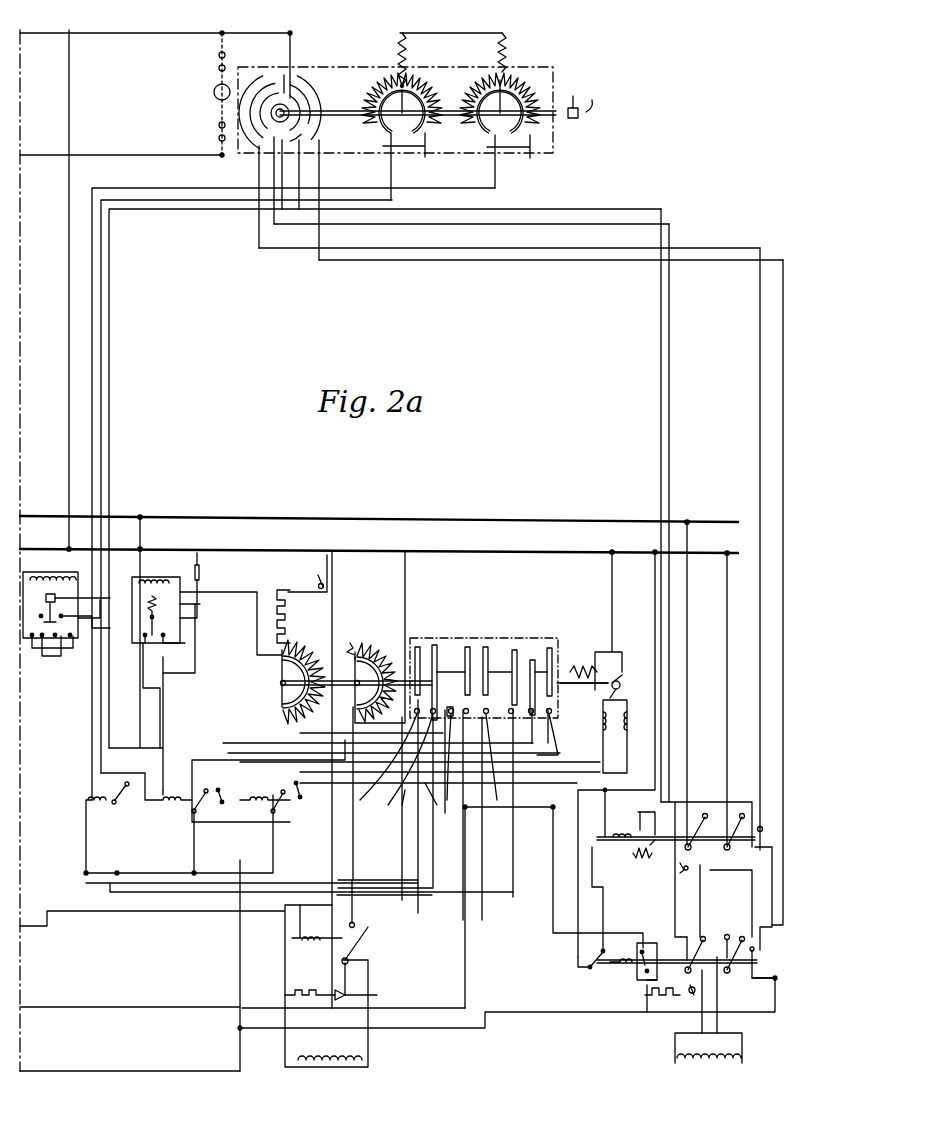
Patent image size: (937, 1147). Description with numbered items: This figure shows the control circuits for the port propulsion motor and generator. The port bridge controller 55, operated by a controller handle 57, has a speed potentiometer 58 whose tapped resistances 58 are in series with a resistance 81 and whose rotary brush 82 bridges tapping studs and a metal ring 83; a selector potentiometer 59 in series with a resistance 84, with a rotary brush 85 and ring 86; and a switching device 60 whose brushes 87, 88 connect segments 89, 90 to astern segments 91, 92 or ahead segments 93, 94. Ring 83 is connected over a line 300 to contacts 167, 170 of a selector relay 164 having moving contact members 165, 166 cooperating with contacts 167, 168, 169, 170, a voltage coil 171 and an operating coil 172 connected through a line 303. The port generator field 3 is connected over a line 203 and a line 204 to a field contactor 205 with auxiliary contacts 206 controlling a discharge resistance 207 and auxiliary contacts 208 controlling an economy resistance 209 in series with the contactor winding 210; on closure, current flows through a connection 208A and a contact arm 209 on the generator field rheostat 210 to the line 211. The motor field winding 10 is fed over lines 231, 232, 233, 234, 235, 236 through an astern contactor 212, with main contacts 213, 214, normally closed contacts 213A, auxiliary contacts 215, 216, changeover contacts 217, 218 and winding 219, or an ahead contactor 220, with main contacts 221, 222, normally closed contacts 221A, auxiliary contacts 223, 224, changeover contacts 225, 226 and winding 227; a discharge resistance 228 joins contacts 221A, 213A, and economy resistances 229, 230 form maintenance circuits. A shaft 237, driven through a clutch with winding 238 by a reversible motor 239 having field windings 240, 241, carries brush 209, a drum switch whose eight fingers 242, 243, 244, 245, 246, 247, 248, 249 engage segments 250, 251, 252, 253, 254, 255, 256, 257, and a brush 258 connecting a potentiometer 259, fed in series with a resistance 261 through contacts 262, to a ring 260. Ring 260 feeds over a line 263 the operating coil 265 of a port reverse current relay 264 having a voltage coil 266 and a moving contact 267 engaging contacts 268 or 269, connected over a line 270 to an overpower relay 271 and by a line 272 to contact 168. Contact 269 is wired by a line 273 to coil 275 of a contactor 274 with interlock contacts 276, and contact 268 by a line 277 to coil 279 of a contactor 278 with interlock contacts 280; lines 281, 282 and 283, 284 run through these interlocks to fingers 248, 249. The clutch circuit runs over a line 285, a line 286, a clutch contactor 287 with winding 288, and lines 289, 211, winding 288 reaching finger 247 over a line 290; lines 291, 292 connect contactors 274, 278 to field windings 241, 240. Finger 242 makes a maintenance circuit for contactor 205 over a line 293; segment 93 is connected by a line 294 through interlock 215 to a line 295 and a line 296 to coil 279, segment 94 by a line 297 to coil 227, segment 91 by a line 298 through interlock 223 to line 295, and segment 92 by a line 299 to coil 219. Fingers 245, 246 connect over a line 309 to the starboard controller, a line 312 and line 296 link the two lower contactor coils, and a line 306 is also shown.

The throttle motor field coil 3 is at (310, 1055).
The reversing motor coil 10 is at (676, 1063).
The control unit 55 is at (553, 67).
The control handle 57 is at (575, 96).
The rheostat 58 is at (412, 82).
The rheostat 59 is at (518, 80).
The contact segment 60 is at (300, 75).
The resistor 81 is at (400, 40).
The contact arm 82 is at (425, 140).
The contact arm 83 is at (392, 140).
The resistor 84 is at (500, 50).
The contact arm 85 is at (503, 90).
The contact arm 86 is at (530, 140).
The contact 87 is at (284, 75).
The contact 88 is at (290, 95).
The contact segment 89 is at (278, 82).
The contact 90 is at (284, 125).
The contact segment 91 is at (262, 78).
The commutator switch 92 is at (262, 146).
The control box 93 is at (318, 82).
The contact 94 is at (307, 130).
The relay 164 is at (40, 572).
The relay contact 165 is at (50, 598).
The conductor 166 is at (92, 628).
The contact 167 is at (32, 636).
The contact 168 is at (42, 636).
The contact 169 is at (70, 636).
The contact 170 is at (55, 636).
The relay coil 171 is at (72, 590).
The conductor 172 is at (93, 591).
The conductor 203 is at (335, 833).
The switch arm 204 is at (370, 980).
The contact 205 is at (370, 927).
The contact 206 is at (348, 990).
The resistor 207 is at (285, 995).
The relay coil 208 is at (317, 922).
The conductor 208A is at (353, 850).
The spring 209 is at (355, 652).
The rheostat winding 210 is at (375, 652).
The switch unit 211 is at (405, 581).
The switch arm 212 is at (742, 970).
The switch arm 213 is at (693, 937).
The contact 213A is at (698, 993).
The contact 214 is at (735, 935).
The contact 215 is at (752, 980).
The switch arm 216 is at (592, 968).
The conductor 217 is at (648, 1000).
The relay contact 218 is at (642, 943).
The relay coil 219 is at (620, 968).
The switch arm 220 is at (705, 815).
The conductor 221 is at (706, 745).
The contact 221A is at (700, 876).
The switch arm 222 is at (742, 814).
The contact 223 is at (763, 830).
The conductor 224 is at (597, 840).
The contact 225 is at (660, 830).
The relay armature 226 is at (640, 830).
The relay coil 227 is at (622, 843).
The resistor 228 is at (665, 1000).
The conductor 229 is at (640, 985).
The resistor 230 is at (648, 860).
The conductor 231 is at (688, 720).
The conductor 232 is at (705, 1020).
The motor coil 233 is at (705, 1063).
The conductor 234 is at (727, 745).
The conductor 235 is at (726, 901).
The conductor 236 is at (712, 896).
The shaft 237 is at (586, 687).
The resistor 238 is at (580, 666).
The contact 239 is at (633, 684).
The relay coil 240 is at (628, 726).
The conductor 241 is at (606, 735).
The conductor 242 is at (388, 758).
The conductor 243 is at (402, 767).
The conductor 244 is at (455, 758).
The conductor 245 is at (491, 758).
The contact 246 is at (510, 709).
The contact 247 is at (519, 726).
The conductor 248 is at (558, 755).
The relay coil 249 is at (550, 712).
The switch bar 250 is at (417, 647).
The switch bar 251 is at (434, 645).
The contact 252 is at (458, 699).
The switch bar 253 is at (468, 647).
The switch bar 254 is at (485, 647).
The switch bar 255 is at (507, 677).
The switch bar 256 is at (532, 660).
The switch bar 257 is at (549, 648).
The rheostat arm 258 is at (280, 682).
The rheostat winding 259 is at (300, 650).
The rheostat contact 260 is at (282, 704).
The resistor 261 is at (287, 606).
The contact 262 is at (302, 599).
The conductor 263 is at (231, 616).
The relay spring 264 is at (166, 619).
The conductor 265 is at (207, 609).
The relay coil 266 is at (156, 600).
The contact 267 is at (148, 650).
The conductor 268 is at (185, 643).
The contact 269 is at (145, 643).
The conductor 270 is at (197, 610).
The resistor 271 is at (199, 573).
The conductor 272 is at (94, 615).
The conductor 273 is at (136, 695).
The conductor 274 is at (208, 792).
The relay coil 275 is at (170, 805).
The switch arm 276 is at (218, 805).
The conductor 277 is at (195, 641).
The contact 278 is at (312, 792).
The relay coil 279 is at (257, 805).
The contact 280 is at (300, 800).
The conductor 281 is at (210, 842).
The conductor 282 is at (453, 815).
The switch arm 283 is at (280, 812).
The contact 284 is at (233, 782).
The conductor 285 is at (612, 612).
The conductor 286 is at (143, 748).
The switch arm 287 is at (128, 797).
The relay coil 288 is at (95, 795).
The conductor 289 is at (105, 883).
The conductor 290 is at (135, 911).
The conductor 291 is at (412, 802).
The conductor 292 is at (577, 783).
The conductor 293 is at (418, 870).
The conductor 294 is at (783, 365).
The conductor 295 is at (518, 1012).
The conductor 296 is at (242, 925).
The conductor 297 is at (661, 362).
The conductor 298 is at (760, 620).
The conductor 299 is at (669, 362).
The conductor 300 is at (400, 195).
The conductor 303 is at (92, 318).
The conductor 306 is at (465, 935).
The conductor 309 is at (160, 1007).
The conductor 312 is at (240, 1062).